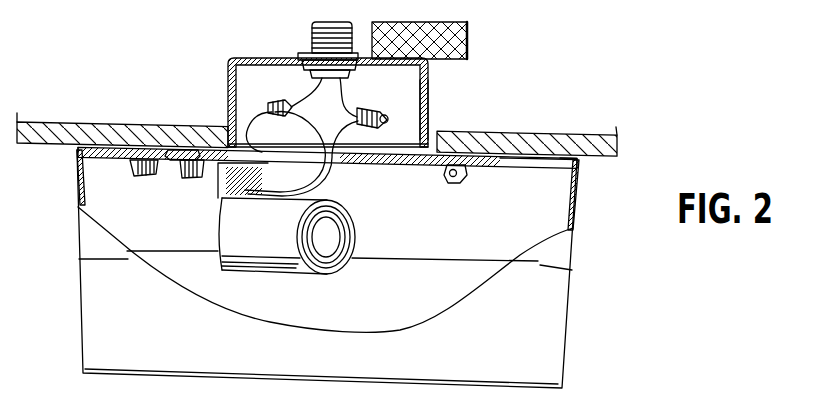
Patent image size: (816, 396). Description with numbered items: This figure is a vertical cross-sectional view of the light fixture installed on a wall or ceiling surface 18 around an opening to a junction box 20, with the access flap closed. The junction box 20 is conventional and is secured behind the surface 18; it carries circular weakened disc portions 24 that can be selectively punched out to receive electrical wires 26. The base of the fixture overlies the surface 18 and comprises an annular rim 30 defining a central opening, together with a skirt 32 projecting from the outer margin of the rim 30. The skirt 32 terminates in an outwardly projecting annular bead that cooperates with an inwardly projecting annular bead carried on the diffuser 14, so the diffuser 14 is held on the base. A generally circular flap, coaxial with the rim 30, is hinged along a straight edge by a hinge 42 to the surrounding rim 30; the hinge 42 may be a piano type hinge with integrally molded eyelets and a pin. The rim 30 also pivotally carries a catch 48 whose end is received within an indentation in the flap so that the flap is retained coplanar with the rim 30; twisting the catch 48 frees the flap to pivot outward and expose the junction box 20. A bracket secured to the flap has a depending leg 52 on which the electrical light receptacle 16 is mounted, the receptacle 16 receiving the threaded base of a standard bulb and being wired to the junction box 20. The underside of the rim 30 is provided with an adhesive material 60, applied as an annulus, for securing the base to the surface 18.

The diffuser 14 is at (553, 326).
The electrical light receptacle 16 is at (283, 274).
The wall or ceiling surface 18 is at (610, 158).
The junction box 20 is at (432, 76).
The circular weakened disc portions 24 is at (430, 100).
The electrical wires 26 is at (303, 95).
The rim 30 is at (495, 164).
The skirt 32 is at (576, 214).
The hinge 42 is at (453, 180).
The catch 48 is at (146, 182).
The depending leg 52 is at (218, 186).
The adhesive material 60 is at (557, 155).